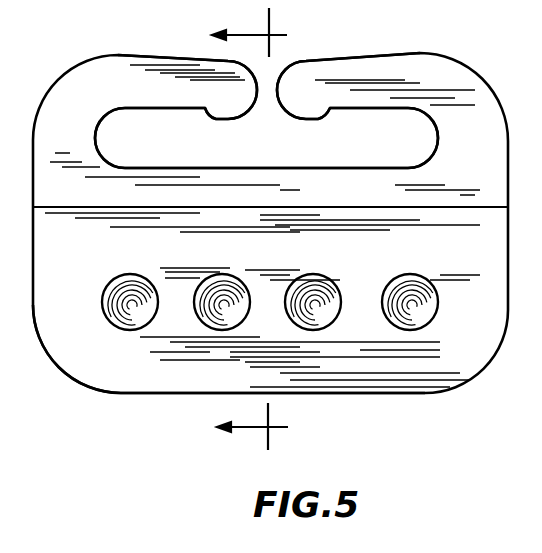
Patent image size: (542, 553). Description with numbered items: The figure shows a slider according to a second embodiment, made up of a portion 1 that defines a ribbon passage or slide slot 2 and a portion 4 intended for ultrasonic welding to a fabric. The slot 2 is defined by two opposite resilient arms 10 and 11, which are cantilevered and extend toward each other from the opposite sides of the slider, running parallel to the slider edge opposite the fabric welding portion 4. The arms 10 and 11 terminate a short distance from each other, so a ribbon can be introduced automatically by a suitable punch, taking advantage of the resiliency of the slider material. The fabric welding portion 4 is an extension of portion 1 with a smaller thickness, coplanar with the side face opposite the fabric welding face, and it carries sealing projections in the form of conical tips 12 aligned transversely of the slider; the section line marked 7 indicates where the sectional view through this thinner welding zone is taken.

The portion 1 is at (502, 192).
The slide slot 2 is at (428, 145).
The fabric welding portion 4 is at (120, 377).
The section line 7- 7 is at (250, 229).
The resilient arm 10 is at (115, 68).
The resilient arm 11 is at (455, 72).
The conical tips 12 is at (390, 308).